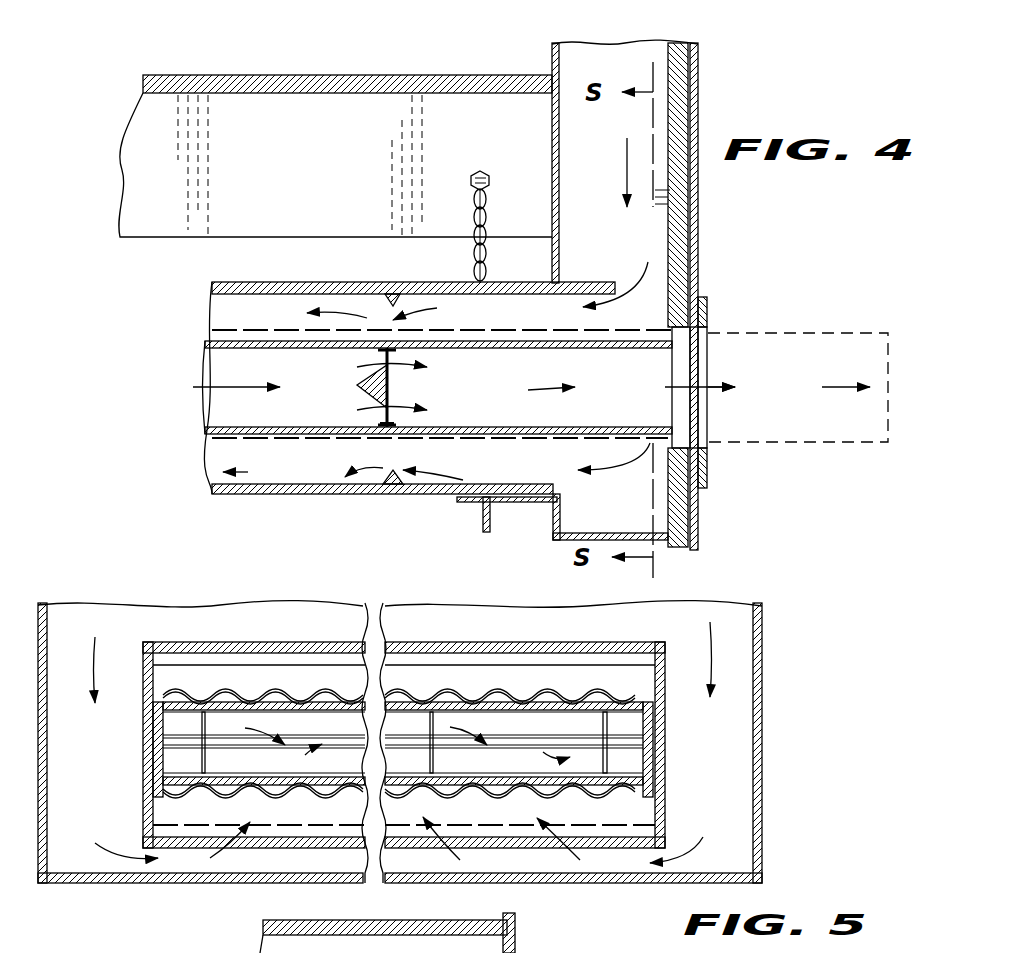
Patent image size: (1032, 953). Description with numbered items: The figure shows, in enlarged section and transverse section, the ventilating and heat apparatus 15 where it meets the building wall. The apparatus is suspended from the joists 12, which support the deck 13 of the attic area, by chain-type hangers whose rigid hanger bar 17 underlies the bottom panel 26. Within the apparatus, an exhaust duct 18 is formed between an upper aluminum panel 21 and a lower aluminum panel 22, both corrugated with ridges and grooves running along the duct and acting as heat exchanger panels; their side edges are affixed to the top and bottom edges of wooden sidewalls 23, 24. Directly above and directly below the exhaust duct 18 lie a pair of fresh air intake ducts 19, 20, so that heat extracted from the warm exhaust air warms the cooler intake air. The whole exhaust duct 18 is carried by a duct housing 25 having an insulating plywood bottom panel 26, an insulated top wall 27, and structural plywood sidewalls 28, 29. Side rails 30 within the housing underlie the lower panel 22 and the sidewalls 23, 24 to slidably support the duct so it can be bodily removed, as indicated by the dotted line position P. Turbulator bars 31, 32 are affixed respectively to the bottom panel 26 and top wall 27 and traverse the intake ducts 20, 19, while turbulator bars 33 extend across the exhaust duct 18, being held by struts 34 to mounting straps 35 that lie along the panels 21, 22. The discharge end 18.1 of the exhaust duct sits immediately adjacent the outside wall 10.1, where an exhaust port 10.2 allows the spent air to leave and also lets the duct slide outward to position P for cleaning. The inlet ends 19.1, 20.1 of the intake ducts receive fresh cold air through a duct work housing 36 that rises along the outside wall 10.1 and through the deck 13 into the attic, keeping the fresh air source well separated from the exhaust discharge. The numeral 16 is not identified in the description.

In FIG. 4, the outside wall 10.1 is at (697, 265).
In FIG. 5, the outside wall 10.1 is at (517, 935).
In FIG. 4, the exhaust port 10.2 is at (707, 422).
In FIG. 4, the joists 12 is at (232, 105).
In FIG. 4, the deck 13 is at (388, 78).
In FIG. 4, the ventilating and heat apparatus 15 is at (175, 462).
In FIG. 5, the ventilating and heat apparatus 15 is at (770, 718).
In FIG. 4, the suspension chain 16 is at (472, 208).
In FIG. 4, the hanger bar 17 is at (480, 523).
In FIG. 4, the exhaust duct 18 is at (464, 405).
In FIG. 5, the exhaust duct 18 is at (405, 719).
In FIG. 4, the discharge end 18.1 is at (707, 358).
In FIG. 4, the fresh air intake duct 19 is at (460, 300).
In FIG. 5, the fresh air intake duct 19 is at (493, 672).
In FIG. 4, the inlet end 19.1 is at (707, 293).
In FIG. 5, the inlet end 19.1 is at (383, 936).
In FIG. 4, the fresh air intake duct 20 is at (537, 483).
In FIG. 5, the fresh air intake duct 20 is at (407, 807).
In FIG. 4, the inlet end 20.1 is at (672, 497).
In FIG. 4, the aluminum panel 21 is at (500, 346).
In FIG. 5, the aluminum panel 21 is at (387, 697).
In FIG. 4, the aluminum panel 22 is at (585, 427).
In FIG. 5, the aluminum panel 22 is at (290, 792).
In FIG. 5, the sidewall 23 is at (653, 747).
In FIG. 5, the sidewall 24 is at (150, 738).
In FIG. 4, the duct housing 25 is at (335, 497).
In FIG. 5, the duct housing 25 is at (667, 823).
In FIG. 4, the bottom panel 26 is at (285, 497).
In FIG. 5, the bottom panel 26 is at (275, 847).
In FIG. 5, the top wall 27 is at (600, 648).
In FIG. 5, the sidewall 28 is at (650, 795).
In FIG. 5, the sidewall 29 is at (150, 765).
In FIG. 5, the side rails 30 is at (160, 815).
In FIG. 4, the turbulator bar 31 is at (392, 490).
In FIG. 5, the turbulator bar 31 is at (262, 828).
In FIG. 4, the turbulator bar 32 is at (388, 298).
In FIG. 5, the turbulator bar 32 is at (246, 622).
In FIG. 4, the turbulator bars 33 is at (357, 388).
In FIG. 5, the turbulator bars 33 is at (573, 740).
In FIG. 4, the struts 34 is at (390, 388).
In FIG. 5, the struts 34 is at (430, 720).
In FIG. 4, the mounting straps 35 is at (416, 432).
In FIG. 5, the mounting straps 35 is at (292, 712).
In FIG. 4, the duct work housing 36 is at (550, 126).
In FIG. 5, the duct work housing 36 is at (762, 830).
In FIG. 4, the dotted line position P is at (835, 332).